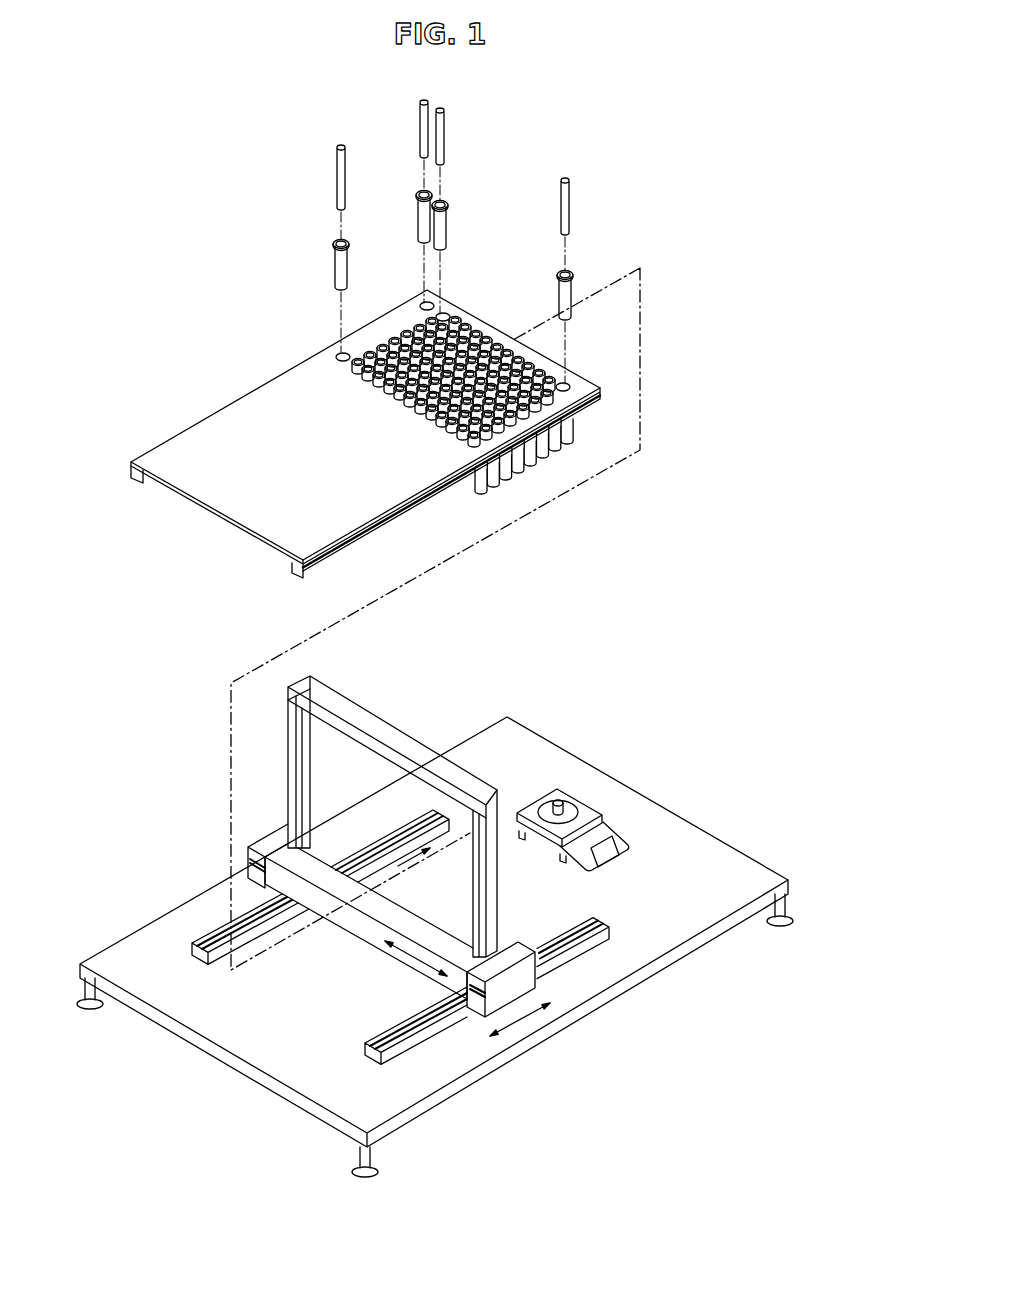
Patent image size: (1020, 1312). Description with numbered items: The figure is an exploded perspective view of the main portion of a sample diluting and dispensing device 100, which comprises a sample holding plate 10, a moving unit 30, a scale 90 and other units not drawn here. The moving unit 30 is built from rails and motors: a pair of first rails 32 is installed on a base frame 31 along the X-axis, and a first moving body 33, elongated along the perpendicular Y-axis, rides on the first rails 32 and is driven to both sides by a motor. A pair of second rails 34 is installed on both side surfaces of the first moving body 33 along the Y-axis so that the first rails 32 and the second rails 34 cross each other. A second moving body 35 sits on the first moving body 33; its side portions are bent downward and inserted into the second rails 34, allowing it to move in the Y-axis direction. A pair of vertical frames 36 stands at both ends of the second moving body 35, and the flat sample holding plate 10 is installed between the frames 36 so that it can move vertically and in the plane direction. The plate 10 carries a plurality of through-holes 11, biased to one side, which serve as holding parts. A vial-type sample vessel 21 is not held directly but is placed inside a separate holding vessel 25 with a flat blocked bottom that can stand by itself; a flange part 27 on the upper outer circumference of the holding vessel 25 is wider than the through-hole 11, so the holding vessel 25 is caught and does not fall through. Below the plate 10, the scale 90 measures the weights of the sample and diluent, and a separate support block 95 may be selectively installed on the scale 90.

The sample diluting and dispensing device 100 is at (714, 292).
The sample holding plate 10 is at (227, 443).
The through-holes 11 is at (338, 352).
The sample vessel 21 is at (343, 170).
The holding vessel 25 is at (342, 260).
The flange part 27 is at (337, 242).
The moving unit 30 is at (248, 736).
The base frame 31 is at (508, 760).
The first rails 32 is at (203, 935).
The first moving body 33 is at (527, 980).
The second rails 34 is at (480, 990).
The second moving body 35 is at (292, 860).
The frames 36 is at (290, 772).
The scale 90 is at (603, 828).
The support block 95 is at (557, 807).